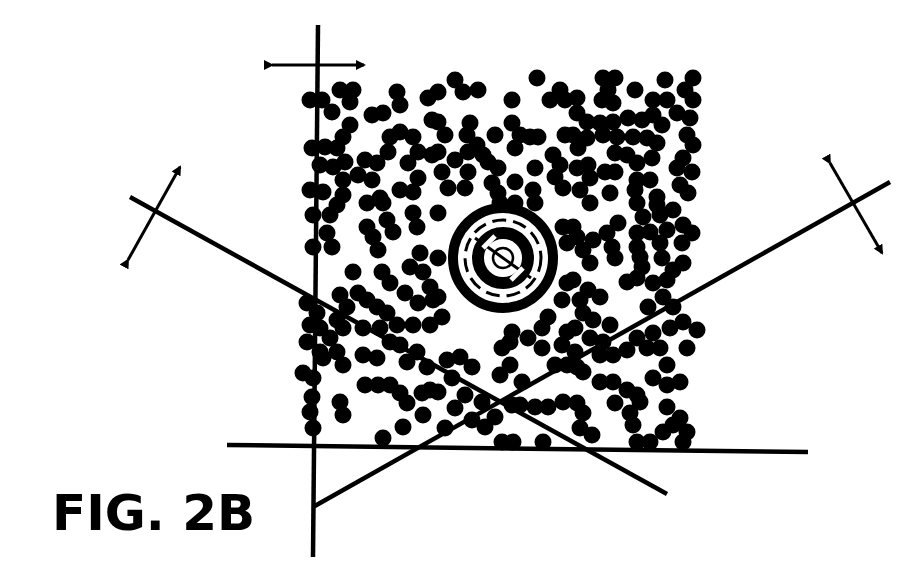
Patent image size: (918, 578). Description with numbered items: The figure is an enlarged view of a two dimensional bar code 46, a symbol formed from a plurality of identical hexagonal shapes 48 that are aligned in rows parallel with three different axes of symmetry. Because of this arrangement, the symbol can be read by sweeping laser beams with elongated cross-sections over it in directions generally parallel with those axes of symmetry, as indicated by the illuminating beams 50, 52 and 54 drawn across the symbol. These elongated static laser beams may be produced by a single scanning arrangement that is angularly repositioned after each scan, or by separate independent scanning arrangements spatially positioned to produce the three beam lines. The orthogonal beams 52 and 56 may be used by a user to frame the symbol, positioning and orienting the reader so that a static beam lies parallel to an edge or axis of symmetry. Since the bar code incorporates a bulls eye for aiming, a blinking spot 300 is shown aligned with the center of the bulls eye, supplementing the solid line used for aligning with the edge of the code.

The two dimensional bar code 46 is at (742, 126).
The hexagonal shape 48 is at (667, 72).
The illuminating beam 50 is at (640, 480).
The illuminating beam 52 is at (315, 535).
The illuminating beam 54 is at (774, 244).
The orthogonal beam 56 is at (768, 451).
The blinking spot 300 is at (470, 302).